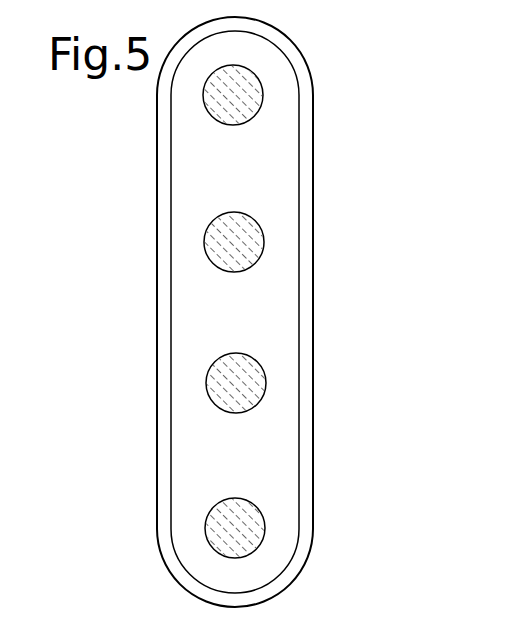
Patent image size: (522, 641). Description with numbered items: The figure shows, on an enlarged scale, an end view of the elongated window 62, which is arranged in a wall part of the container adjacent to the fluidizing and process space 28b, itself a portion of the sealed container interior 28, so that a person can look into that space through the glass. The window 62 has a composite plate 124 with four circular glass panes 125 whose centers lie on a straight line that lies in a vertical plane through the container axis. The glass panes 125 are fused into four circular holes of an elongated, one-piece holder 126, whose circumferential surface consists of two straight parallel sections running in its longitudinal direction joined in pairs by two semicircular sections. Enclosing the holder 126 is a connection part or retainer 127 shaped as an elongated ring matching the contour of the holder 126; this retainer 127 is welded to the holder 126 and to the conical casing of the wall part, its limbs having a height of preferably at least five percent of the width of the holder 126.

The composite plate 124 is at (171, 110).
The circular glass panes 125 is at (215, 122).
The holder 126 is at (183, 467).
The connection part or retainer 127 is at (158, 510).
The window 62 is at (272, 95).
The container interior 28 is at (20, 311).
The fluidizing and process space 28b is at (29, 348).